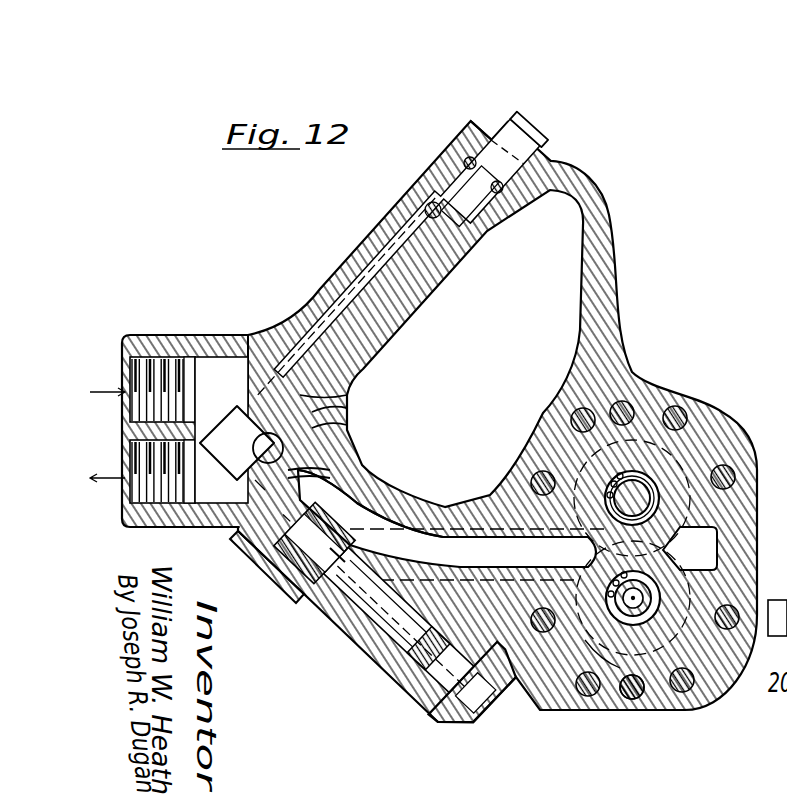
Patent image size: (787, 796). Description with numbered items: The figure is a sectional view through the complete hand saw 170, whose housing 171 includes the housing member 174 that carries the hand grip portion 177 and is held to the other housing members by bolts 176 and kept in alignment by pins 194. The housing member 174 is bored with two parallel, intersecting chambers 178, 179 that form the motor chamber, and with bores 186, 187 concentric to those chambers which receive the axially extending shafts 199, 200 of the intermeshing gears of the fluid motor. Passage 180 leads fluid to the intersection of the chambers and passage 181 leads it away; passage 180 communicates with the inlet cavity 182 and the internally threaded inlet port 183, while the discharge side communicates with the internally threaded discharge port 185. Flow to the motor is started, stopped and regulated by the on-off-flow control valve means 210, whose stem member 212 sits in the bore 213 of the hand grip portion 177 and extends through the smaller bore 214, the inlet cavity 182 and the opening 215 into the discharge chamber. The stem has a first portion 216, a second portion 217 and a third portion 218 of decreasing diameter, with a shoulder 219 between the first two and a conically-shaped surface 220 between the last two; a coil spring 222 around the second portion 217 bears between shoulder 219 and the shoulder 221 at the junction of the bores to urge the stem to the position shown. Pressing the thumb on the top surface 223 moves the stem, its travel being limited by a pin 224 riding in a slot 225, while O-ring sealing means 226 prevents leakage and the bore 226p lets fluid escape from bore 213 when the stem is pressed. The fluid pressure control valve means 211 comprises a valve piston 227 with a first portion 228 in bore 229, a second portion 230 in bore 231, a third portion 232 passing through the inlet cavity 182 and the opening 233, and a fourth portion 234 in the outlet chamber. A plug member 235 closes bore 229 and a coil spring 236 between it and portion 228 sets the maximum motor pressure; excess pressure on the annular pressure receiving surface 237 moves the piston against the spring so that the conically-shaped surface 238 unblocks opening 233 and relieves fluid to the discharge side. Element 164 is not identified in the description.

The hand saw 170 is at (632, 242).
The housing 171 is at (675, 380).
The housing member 174 is at (461, 500).
The bolts 176 is at (572, 419).
The hand grip portion 177 is at (364, 256).
The chamber 178 is at (580, 449).
The chamber 179 is at (594, 650).
The passage 180 is at (526, 564).
The passage 181 is at (674, 554).
The inlet cavity 182 is at (330, 427).
The inlet port 183 is at (122, 362).
The discharge port 185 is at (122, 502).
The bore 186 is at (646, 473).
The bore 187 is at (658, 597).
The pins 194 is at (633, 700).
The shaft 199 is at (616, 499).
The shaft 200 is at (656, 641).
The on-off-flow control valve means 210 is at (569, 157).
The fluid pressure control valve means 211 is at (331, 637).
The stem member 212 is at (467, 247).
The bore 213 is at (420, 302).
The bore 214 is at (282, 345).
The opening 215 is at (256, 408).
The first portion 216 is at (504, 131).
The second portion 217 is at (412, 314).
The third portion 218 is at (256, 346).
The shoulder 219 is at (410, 228).
The conically-shaped surface 220 is at (349, 404).
The shoulder 221 is at (350, 393).
The coil spring 222 is at (442, 272).
The top surface 223 is at (535, 128).
The pin 224 is at (433, 188).
The slot 225 is at (484, 208).
The O-ring sealing means 226 is at (503, 190).
The bore 226p is at (340, 325).
The valve piston 227 is at (412, 531).
The first portion 228 is at (330, 566).
The bore 229 is at (392, 650).
The second portion 230 is at (340, 496).
The bore 231 is at (300, 560).
The third portion 232 is at (306, 472).
The opening 233 is at (352, 458).
The fourth portion 234 is at (240, 556).
The plug member 235 is at (463, 702).
The coil spring 236 is at (424, 664).
The annular pressure receiving surface 237 is at (268, 548).
The conically-shaped surface 238 is at (269, 447).
The seal 164 is at (256, 506).